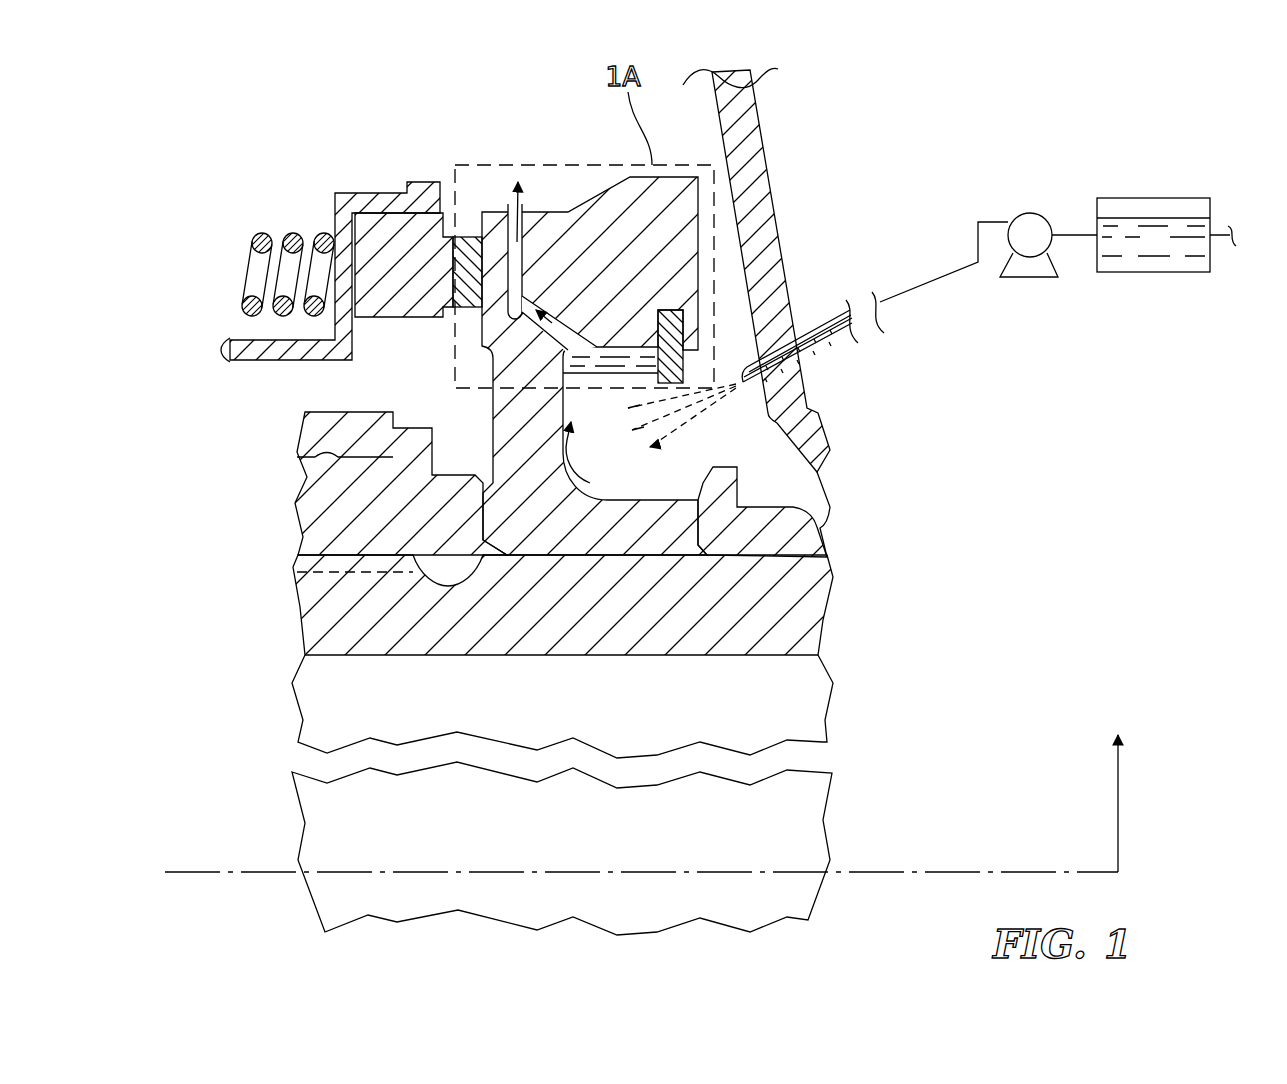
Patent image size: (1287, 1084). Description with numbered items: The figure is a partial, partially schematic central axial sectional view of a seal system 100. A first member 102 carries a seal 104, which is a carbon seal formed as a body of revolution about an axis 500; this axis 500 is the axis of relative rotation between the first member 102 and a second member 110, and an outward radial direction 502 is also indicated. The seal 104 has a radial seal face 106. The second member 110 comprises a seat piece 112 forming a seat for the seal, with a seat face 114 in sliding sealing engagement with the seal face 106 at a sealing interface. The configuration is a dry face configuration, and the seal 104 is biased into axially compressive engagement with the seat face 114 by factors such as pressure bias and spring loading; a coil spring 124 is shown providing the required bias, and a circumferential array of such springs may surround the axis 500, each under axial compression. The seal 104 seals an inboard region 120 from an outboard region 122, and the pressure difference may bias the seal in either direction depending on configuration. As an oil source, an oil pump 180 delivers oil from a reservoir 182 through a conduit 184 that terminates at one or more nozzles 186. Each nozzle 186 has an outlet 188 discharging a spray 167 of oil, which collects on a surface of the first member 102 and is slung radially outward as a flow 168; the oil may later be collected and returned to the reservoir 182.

The seal system 100 is at (262, 112).
The first member 102 is at (375, 190).
The seal 104 is at (383, 293).
The seal surface or face 106 is at (508, 283).
The second member 110 is at (682, 208).
The seat piece 112 is at (597, 200).
The seat surface or face 114 is at (477, 260).
The space or region inboard 120 is at (352, 398).
The space or region outboard 122 is at (468, 198).
The spring 124 is at (282, 229).
The spray 167 is at (677, 430).
The flow 168 is at (566, 463).
The oil pump 180 is at (1029, 207).
The reservoir 182 is at (1154, 195).
The conduit 184 is at (943, 277).
The nozzle 186 is at (825, 345).
The outlet 188 is at (743, 385).
The axis 500 is at (928, 870).
The outward radial direction 502 is at (1117, 780).